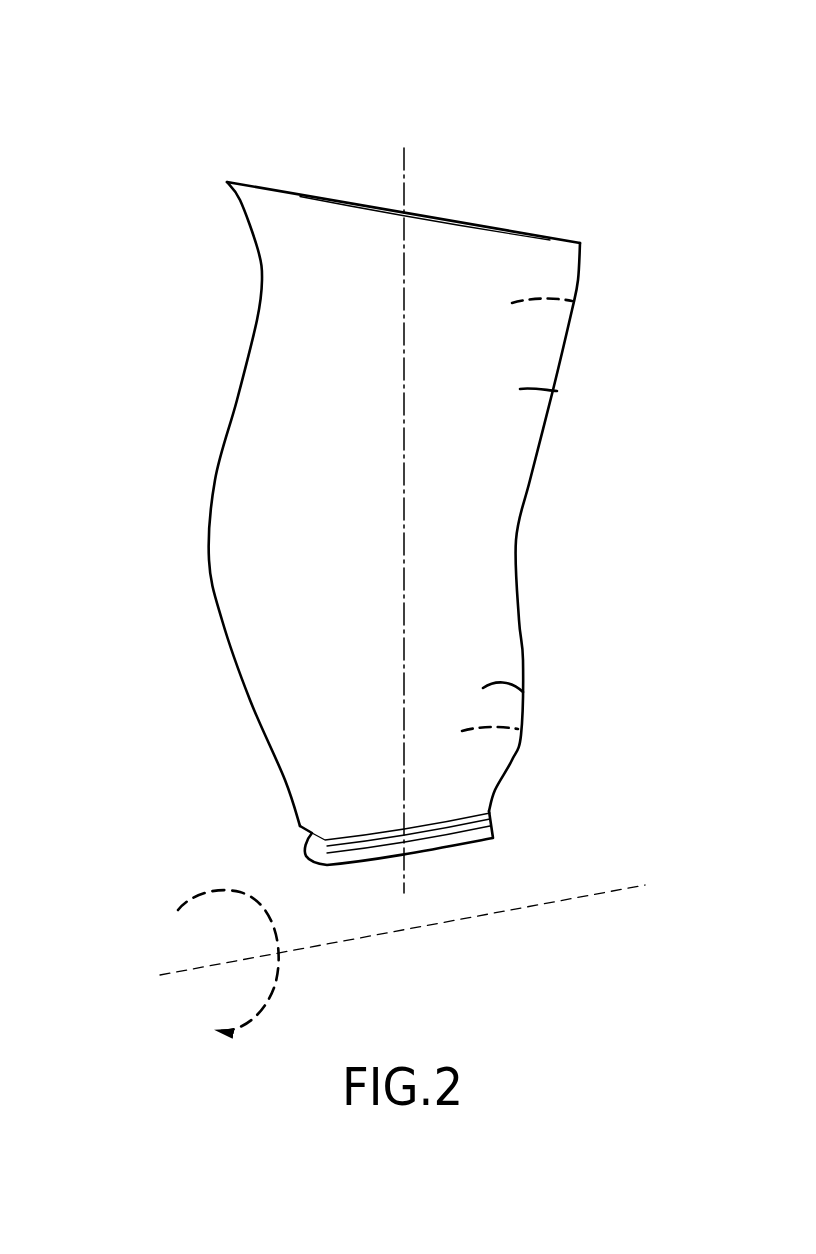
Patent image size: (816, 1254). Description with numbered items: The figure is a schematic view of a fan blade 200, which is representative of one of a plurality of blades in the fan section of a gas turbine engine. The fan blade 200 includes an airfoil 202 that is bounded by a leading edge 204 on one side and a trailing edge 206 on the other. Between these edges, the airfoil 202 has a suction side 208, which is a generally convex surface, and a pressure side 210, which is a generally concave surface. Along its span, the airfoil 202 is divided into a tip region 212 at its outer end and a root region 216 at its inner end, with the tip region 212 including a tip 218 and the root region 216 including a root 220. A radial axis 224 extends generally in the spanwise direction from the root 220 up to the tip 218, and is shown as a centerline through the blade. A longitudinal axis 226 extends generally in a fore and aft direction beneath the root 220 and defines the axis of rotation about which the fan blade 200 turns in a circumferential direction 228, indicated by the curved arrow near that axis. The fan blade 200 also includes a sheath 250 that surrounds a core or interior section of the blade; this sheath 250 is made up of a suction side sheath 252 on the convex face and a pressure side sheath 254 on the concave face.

The fan blade 200 is at (148, 98).
The airfoil 202 is at (553, 604).
The leading edge 204 is at (216, 476).
The trailing edge 206 is at (522, 503).
The suction side 208 is at (557, 391).
The pressure side 210 is at (572, 310).
The tip region 212 is at (222, 222).
The root region 216 is at (272, 818).
The tip 218 is at (357, 202).
The root 220 is at (490, 820).
The radial axis 224 is at (405, 186).
The longitudinal axis 226 is at (575, 897).
The circumferential direction 228 is at (282, 978).
The sheath 250 is at (254, 752).
The suction side sheath 252 is at (523, 692).
The pressure side sheath 254 is at (520, 736).